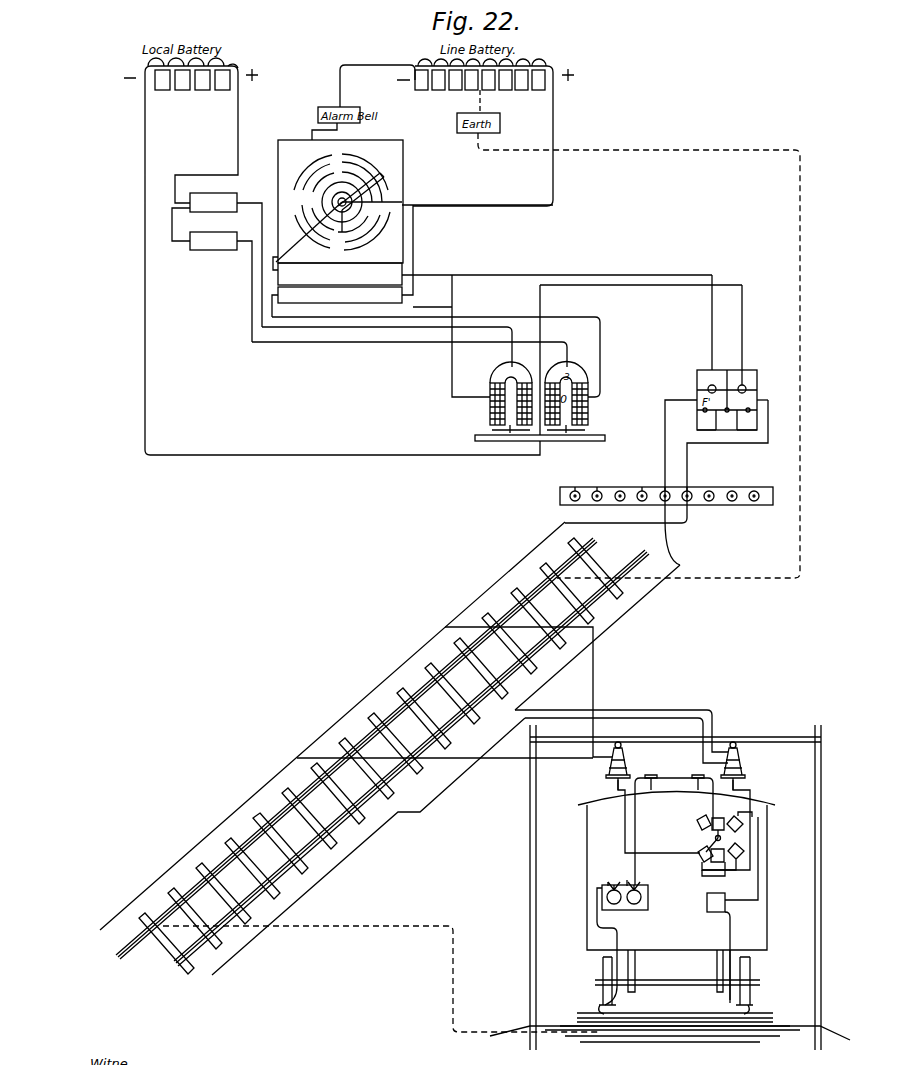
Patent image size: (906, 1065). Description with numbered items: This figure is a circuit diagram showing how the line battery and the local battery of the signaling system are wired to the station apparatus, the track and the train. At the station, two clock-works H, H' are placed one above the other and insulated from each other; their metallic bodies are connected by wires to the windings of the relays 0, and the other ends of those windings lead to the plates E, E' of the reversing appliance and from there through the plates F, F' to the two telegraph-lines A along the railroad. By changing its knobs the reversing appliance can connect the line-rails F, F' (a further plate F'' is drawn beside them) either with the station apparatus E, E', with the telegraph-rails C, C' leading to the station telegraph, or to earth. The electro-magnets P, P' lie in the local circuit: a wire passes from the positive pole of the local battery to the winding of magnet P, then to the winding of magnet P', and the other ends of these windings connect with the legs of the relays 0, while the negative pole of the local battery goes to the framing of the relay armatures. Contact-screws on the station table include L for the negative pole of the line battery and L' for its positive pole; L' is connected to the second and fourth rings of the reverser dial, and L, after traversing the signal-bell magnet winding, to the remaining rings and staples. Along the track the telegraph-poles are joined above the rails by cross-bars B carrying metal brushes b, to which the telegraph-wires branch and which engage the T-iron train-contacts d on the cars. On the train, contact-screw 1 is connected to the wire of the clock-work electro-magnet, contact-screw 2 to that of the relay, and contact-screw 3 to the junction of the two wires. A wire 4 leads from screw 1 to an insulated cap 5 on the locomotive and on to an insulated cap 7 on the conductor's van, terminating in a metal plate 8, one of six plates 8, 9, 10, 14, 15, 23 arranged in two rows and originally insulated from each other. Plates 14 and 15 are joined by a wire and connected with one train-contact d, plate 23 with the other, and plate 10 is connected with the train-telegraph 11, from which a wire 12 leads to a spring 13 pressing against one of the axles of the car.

The upper clock-work H is at (338, 214).
The lower clock-work H' is at (342, 261).
The electro-magnet P is at (226, 260).
The electro-magnet P' is at (212, 275).
The relay 0 is at (511, 397).
The reverser plate E is at (727, 400).
The reverser plate E' is at (736, 379).
The line-rail F is at (663, 481).
The line-rail F' is at (685, 481).
The terminal F'' is at (749, 402).
The telegraph-rail C is at (712, 424).
The telegraph-rail C' is at (747, 424).
The contact-screw for negative pole of line-battery L is at (666, 488).
The contact-screw for positive pole of line-battery L' is at (640, 481).
The telegraph-line A is at (390, 748).
The cross-bar B is at (675, 887).
The metal brush contact b is at (678, 806).
The train-contact d is at (614, 781).
The contact-screw 1 is at (622, 937).
The contact-screw 2 is at (609, 877).
The contact-screw 3 is at (626, 877).
The wire 4 is at (634, 830).
The insulated cap 5 is at (674, 808).
The insulated cap 7 is at (698, 776).
The metal plate 8 is at (718, 823).
The metal plate 9 is at (704, 822).
The metal plate 10 is at (739, 822).
The train-telegraph 11 is at (718, 946).
The wire 12 is at (738, 965).
The spring 13 is at (677, 971).
The metal plate 14 is at (704, 858).
The metal plate 15 is at (723, 859).
The metal plate 23 is at (717, 855).